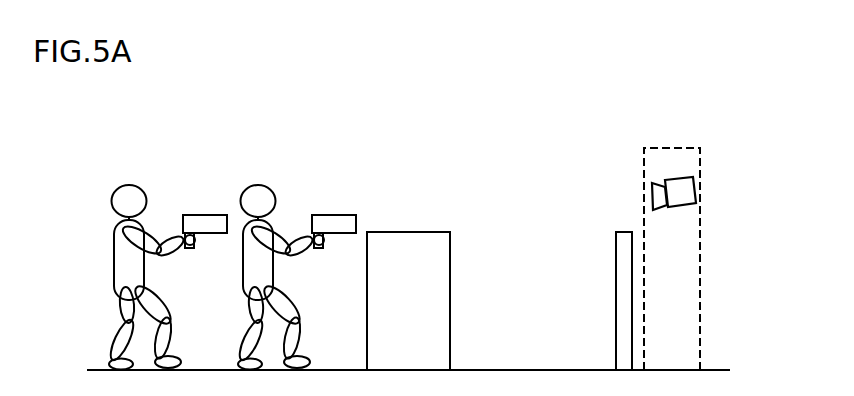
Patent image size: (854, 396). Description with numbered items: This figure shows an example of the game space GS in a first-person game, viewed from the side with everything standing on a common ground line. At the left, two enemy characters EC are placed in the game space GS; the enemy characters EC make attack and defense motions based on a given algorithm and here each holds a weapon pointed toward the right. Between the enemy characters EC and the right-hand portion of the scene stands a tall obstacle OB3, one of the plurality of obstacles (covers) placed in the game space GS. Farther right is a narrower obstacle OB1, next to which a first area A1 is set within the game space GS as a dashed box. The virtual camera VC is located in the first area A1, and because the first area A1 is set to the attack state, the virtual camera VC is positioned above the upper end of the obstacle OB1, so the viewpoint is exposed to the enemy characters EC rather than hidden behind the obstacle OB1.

The enemy character EC is at (132, 182).
The obstacle OB3 is at (403, 232).
The obstacle OB1 is at (628, 231).
The first area A1 is at (677, 148).
The virtual camera VC is at (685, 190).
The game space GS is at (600, 74).